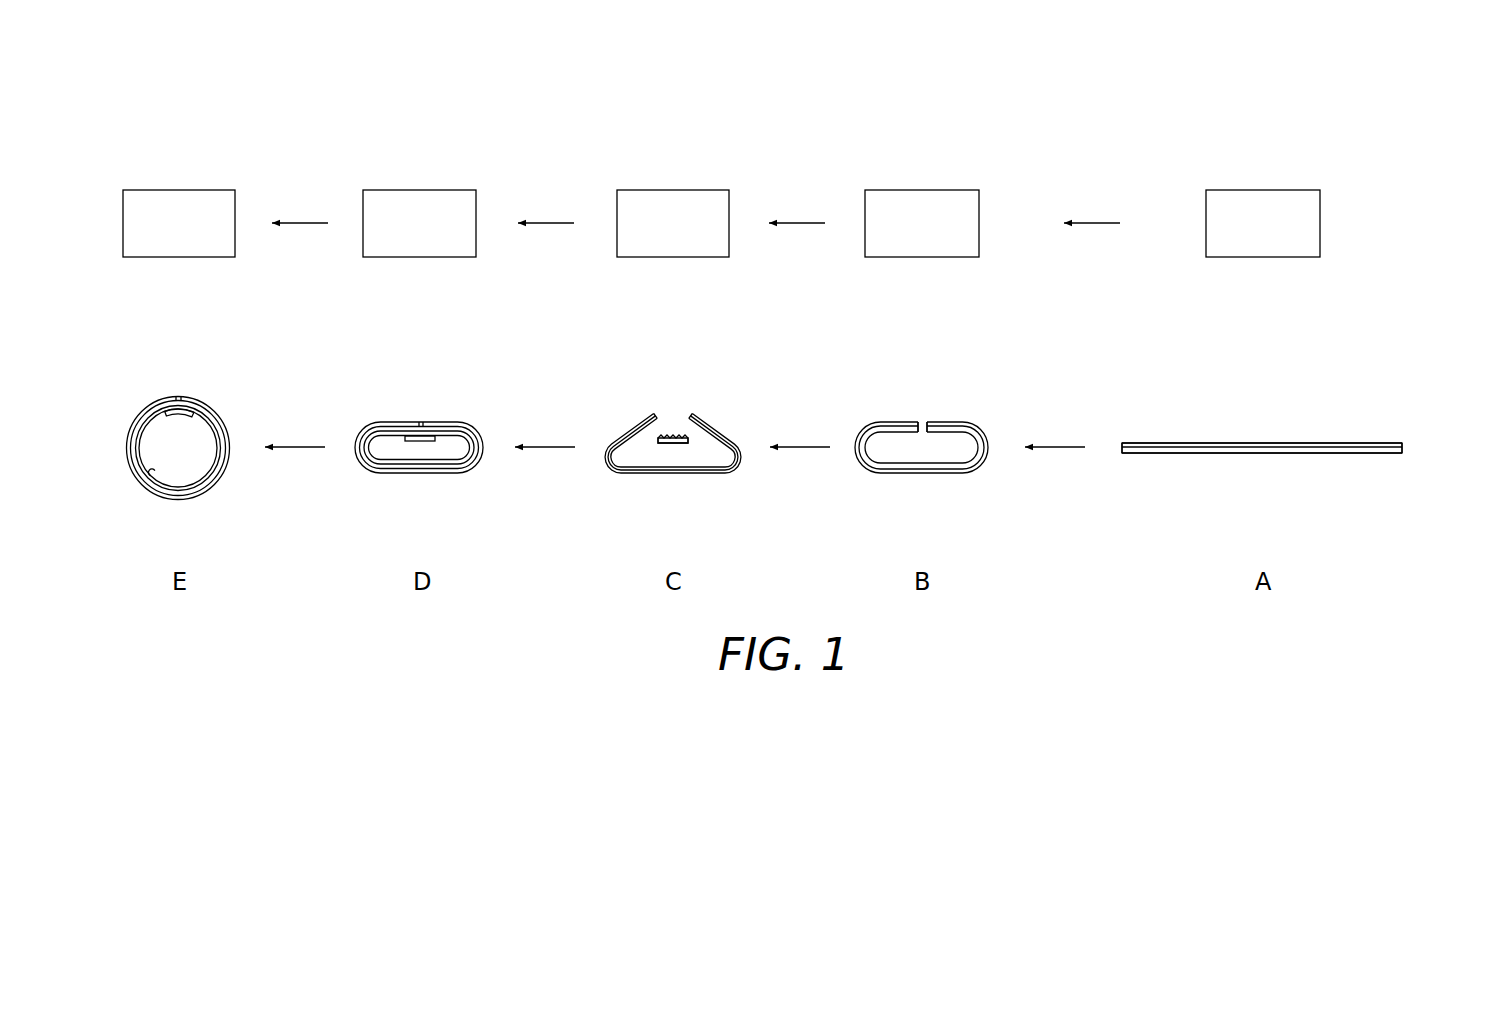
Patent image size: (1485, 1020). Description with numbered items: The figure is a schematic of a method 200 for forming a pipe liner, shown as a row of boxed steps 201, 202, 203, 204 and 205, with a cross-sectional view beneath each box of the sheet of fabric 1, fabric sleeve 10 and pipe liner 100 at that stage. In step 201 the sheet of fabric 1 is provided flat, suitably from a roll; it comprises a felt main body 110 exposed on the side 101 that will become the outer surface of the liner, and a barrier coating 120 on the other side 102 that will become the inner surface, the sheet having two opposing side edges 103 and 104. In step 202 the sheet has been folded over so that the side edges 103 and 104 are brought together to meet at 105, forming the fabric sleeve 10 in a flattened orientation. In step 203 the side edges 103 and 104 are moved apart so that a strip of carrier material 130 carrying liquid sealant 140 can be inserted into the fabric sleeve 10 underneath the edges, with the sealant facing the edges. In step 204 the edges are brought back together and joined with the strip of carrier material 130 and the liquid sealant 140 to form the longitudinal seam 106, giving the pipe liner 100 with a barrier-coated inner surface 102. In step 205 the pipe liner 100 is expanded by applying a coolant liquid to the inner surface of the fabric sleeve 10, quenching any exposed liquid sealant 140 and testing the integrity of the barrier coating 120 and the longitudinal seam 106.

The sheet of fabric 1 is at (1373, 410).
The fabric sleeve 10 is at (997, 412).
The pipe liner 100 is at (459, 400).
The side 101 is at (1205, 454).
The side 102 is at (1205, 442).
The side edge 103 is at (1403, 452).
The side edge 104 is at (1121, 452).
The meeting point of side edges 105 is at (922, 422).
The longitudinal seam 106 is at (421, 421).
The felt main body 110 is at (1320, 454).
The barrier coating 120 is at (1320, 442).
The strip of carrier material 130 is at (671, 445).
The liquid sealant 140 is at (670, 434).
The method 200 is at (1131, 132).
The step 201 is at (1263, 223).
The step 202 is at (922, 223).
The step 203 is at (673, 223).
The step 204 is at (419, 223).
The step 205 is at (179, 223).